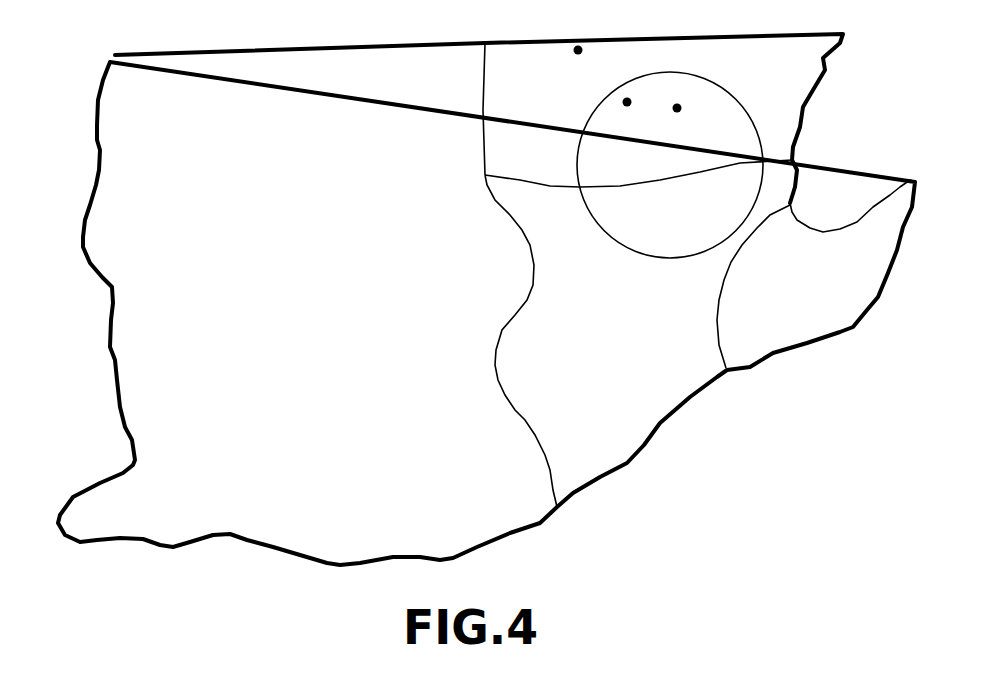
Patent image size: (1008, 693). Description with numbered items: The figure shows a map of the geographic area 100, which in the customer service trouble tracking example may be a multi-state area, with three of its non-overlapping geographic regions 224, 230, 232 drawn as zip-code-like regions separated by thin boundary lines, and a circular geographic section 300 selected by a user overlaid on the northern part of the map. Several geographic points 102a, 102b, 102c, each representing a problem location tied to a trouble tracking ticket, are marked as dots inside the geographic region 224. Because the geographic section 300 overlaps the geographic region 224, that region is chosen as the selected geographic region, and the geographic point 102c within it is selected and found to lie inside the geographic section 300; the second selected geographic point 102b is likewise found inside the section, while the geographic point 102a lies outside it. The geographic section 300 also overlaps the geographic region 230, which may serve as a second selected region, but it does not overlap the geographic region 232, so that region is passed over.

The geographic area 100 is at (532, 42).
The geographic point 102a is at (575, 55).
The second selected geographic point 102b is at (632, 105).
The selected geographic point 102c is at (681, 110).
The geographic region 224 is at (797, 71).
The geographic region 230 is at (702, 366).
The geographic region 232 is at (875, 259).
The geographic section 300 is at (710, 229).